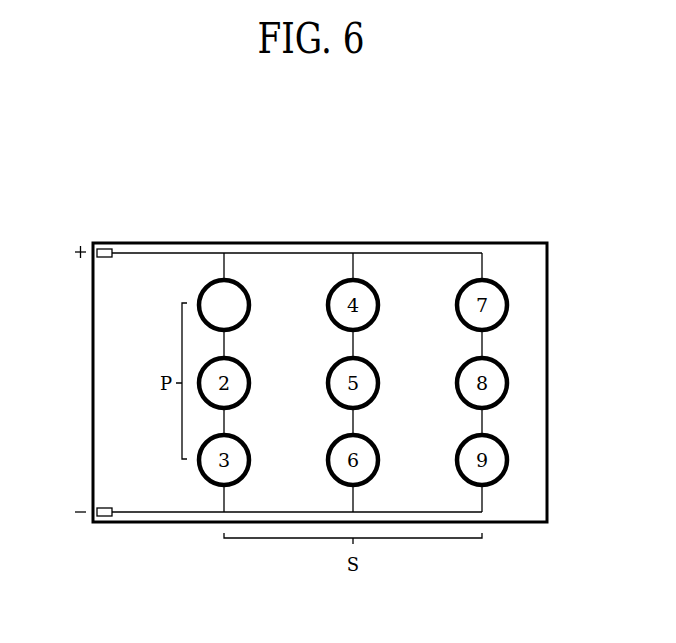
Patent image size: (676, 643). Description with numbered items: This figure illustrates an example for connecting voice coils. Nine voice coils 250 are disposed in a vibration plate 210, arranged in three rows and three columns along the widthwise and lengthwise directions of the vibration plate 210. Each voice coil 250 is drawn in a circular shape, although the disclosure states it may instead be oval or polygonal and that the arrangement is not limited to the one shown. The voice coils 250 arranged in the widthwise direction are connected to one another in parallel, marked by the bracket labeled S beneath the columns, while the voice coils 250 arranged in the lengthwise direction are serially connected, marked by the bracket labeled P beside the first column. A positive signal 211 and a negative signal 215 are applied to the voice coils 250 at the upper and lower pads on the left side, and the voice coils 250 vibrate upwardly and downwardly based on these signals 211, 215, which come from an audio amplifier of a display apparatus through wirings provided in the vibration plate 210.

The vibration plate 210 is at (548, 243).
The positive '+' signal 211 is at (103, 243).
The negative '−' signal 215 is at (102, 518).
The voice coil 250 is at (198, 291).